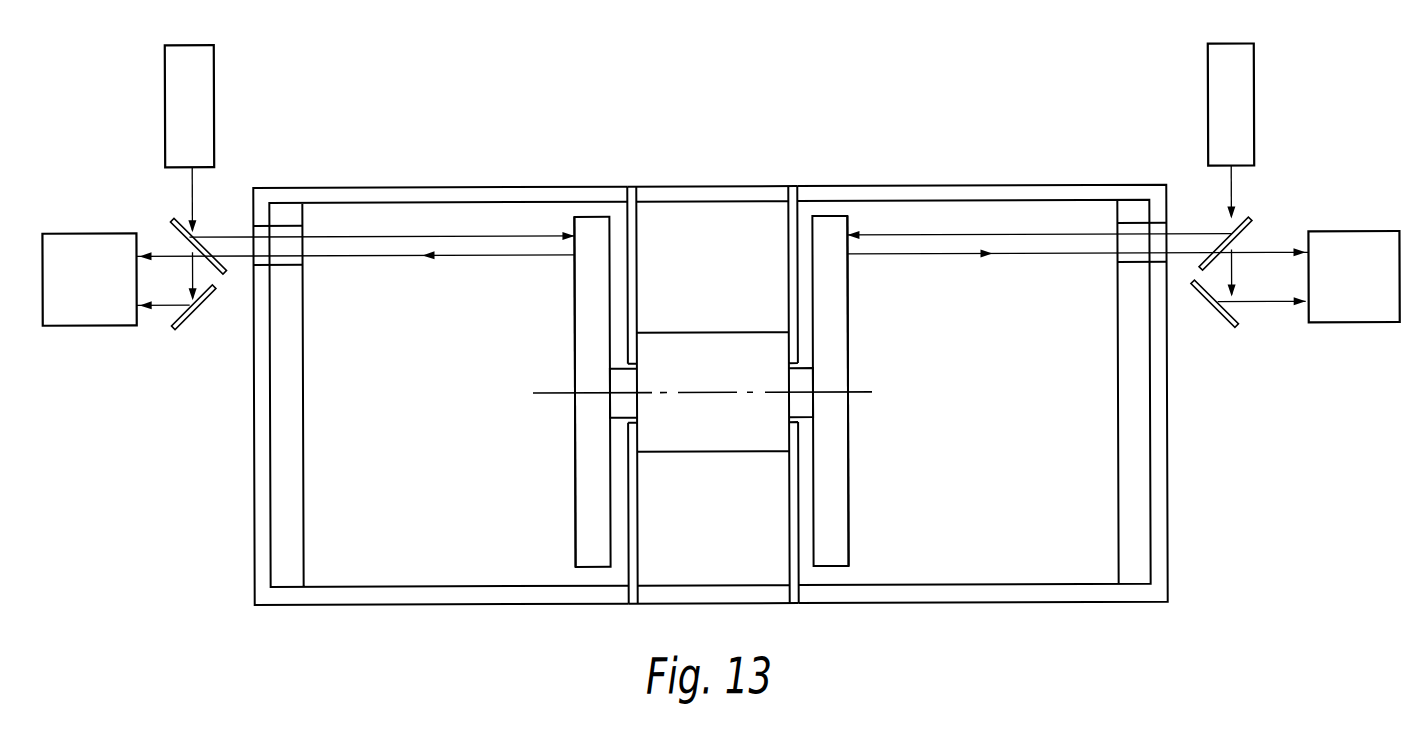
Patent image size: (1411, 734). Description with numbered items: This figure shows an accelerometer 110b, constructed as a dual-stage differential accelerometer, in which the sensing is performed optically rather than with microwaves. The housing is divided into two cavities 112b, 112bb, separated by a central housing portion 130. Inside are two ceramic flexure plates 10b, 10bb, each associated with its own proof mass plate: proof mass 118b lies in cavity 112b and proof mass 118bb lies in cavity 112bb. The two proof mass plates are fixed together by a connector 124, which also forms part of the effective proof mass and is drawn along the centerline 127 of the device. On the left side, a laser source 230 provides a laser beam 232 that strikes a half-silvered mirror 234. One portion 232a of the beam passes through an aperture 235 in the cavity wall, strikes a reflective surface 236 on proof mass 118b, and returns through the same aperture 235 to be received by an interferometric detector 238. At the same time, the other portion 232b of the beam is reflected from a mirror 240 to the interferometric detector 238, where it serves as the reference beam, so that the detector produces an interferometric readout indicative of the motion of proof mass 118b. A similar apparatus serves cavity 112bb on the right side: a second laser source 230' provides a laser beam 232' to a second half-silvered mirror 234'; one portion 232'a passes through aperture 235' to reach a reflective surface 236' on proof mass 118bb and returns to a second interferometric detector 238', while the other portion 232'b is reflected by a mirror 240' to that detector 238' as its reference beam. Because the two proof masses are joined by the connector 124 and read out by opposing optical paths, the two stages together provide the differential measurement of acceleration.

The accelerometer 110b is at (985, 70).
The cavity 112b is at (428, 187).
The cavity 112bb is at (960, 187).
The housing top wall 130 is at (697, 187).
The aperture 235 is at (307, 206).
The second window 235' is at (1125, 197).
The first partition wall 10b is at (637, 240).
The ceramic flexure plate 10bb is at (789, 511).
The connector 124 is at (688, 334).
The axis of rotation 127 is at (550, 394).
The proof mass 118b is at (574, 497).
The second plate 118bb is at (848, 503).
The reflective surface 236 is at (537, 392).
The second reflective surface 236' is at (886, 391).
The laser source 230 is at (224, 106).
The second laser 230' is at (1268, 104).
The laser beam 232 is at (236, 189).
The second laser beam 232' is at (1273, 187).
The beam portion 232a is at (418, 237).
The second reflected beam portion 232'a is at (1077, 232).
The beam portion 232b is at (193, 275).
The second transmitted beam portion 232'b is at (1269, 306).
The half-silvered mirror 234 is at (163, 228).
The second beam splitter 234' is at (1257, 231).
The mirror 240 is at (204, 326).
The second mirror 240' is at (1208, 317).
The interferometric detector 238 is at (89, 300).
The second image detector 238' is at (1356, 299).